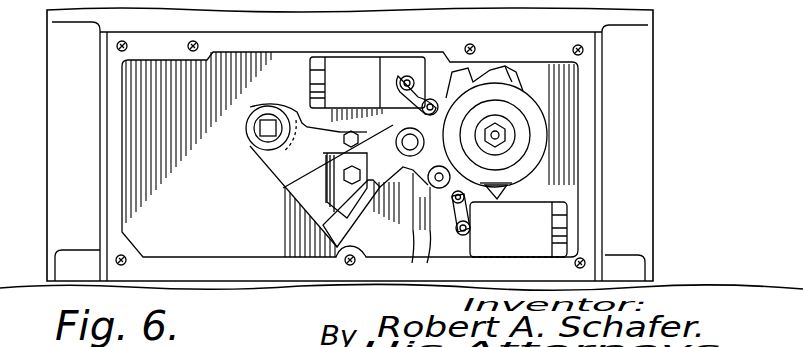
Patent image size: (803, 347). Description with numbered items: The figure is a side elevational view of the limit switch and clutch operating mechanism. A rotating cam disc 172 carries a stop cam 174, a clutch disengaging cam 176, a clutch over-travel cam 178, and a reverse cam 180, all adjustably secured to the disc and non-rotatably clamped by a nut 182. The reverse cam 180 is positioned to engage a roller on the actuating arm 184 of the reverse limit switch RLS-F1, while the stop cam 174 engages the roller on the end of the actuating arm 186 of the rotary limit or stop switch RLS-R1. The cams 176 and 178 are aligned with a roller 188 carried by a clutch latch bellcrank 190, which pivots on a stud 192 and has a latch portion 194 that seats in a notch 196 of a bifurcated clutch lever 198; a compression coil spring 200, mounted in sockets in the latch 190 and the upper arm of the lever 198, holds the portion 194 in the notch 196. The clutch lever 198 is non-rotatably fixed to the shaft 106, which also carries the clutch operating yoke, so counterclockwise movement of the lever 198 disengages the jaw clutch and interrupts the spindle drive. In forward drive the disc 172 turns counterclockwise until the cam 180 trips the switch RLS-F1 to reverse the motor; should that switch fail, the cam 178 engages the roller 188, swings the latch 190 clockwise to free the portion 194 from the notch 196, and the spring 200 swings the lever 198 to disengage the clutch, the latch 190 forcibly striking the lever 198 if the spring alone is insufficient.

The reverse limit switch RLS-F1 is at (333, 70).
The rotary limit or stop switch RLS-R1 is at (543, 258).
The shaft 106 is at (262, 130).
The cam disc 172 is at (535, 102).
The stop cam 174 is at (483, 192).
The clutch disengaging cam 176 is at (507, 187).
The clutch over-travel cam 178 is at (457, 88).
The reverse cam 180 is at (509, 93).
The nut 182 is at (507, 131).
The actuating arm 184 is at (404, 88).
The actuating arm 186 is at (440, 257).
The roller 188 is at (396, 257).
The clutch latch bellcrank 190 is at (365, 248).
The stud 192 is at (420, 126).
The latch portion 194 is at (368, 223).
The notch 196 is at (330, 236).
The bifurcated clutch lever 198 is at (273, 168).
The compression coil spring 200 is at (360, 158).